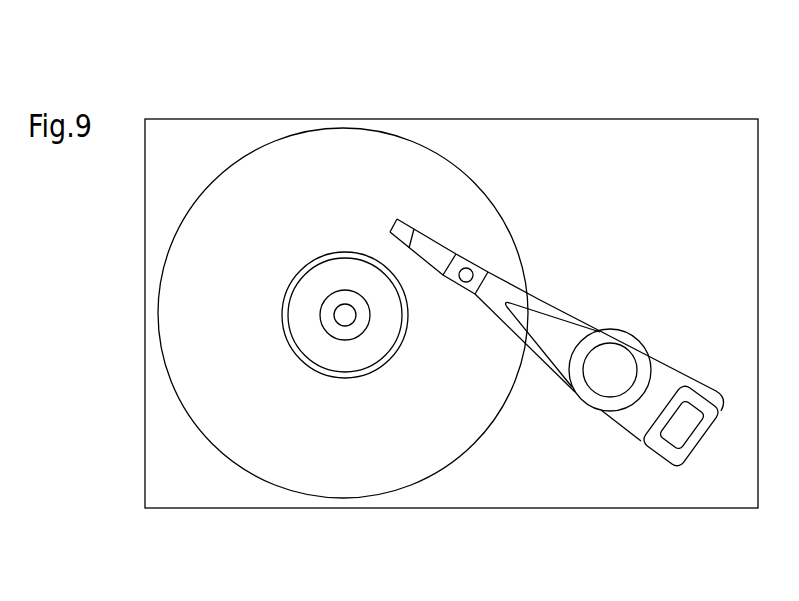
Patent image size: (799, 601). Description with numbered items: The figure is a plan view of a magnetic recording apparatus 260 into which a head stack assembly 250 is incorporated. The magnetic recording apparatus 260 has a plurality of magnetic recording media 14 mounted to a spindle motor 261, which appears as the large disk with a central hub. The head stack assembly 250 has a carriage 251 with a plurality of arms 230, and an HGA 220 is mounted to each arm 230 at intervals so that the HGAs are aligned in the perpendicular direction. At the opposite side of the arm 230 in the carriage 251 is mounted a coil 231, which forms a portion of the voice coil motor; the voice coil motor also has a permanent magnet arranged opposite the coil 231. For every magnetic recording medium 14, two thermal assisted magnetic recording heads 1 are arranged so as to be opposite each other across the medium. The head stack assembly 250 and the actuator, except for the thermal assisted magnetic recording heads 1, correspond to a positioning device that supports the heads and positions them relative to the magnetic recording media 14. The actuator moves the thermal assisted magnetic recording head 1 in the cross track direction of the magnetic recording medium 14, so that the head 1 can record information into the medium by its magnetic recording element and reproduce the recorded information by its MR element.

The thermal assisted magnetic recording head 1 is at (411, 225).
The magnetic recording medium 14 is at (275, 485).
The HGA 220 is at (441, 273).
The arm 230 is at (549, 369).
The coil 231 is at (705, 440).
The head stack assembly 250 is at (608, 432).
The carriage 251 is at (612, 328).
The magnetic recording apparatus 260 is at (492, 92).
The spindle motor 261 is at (345, 322).